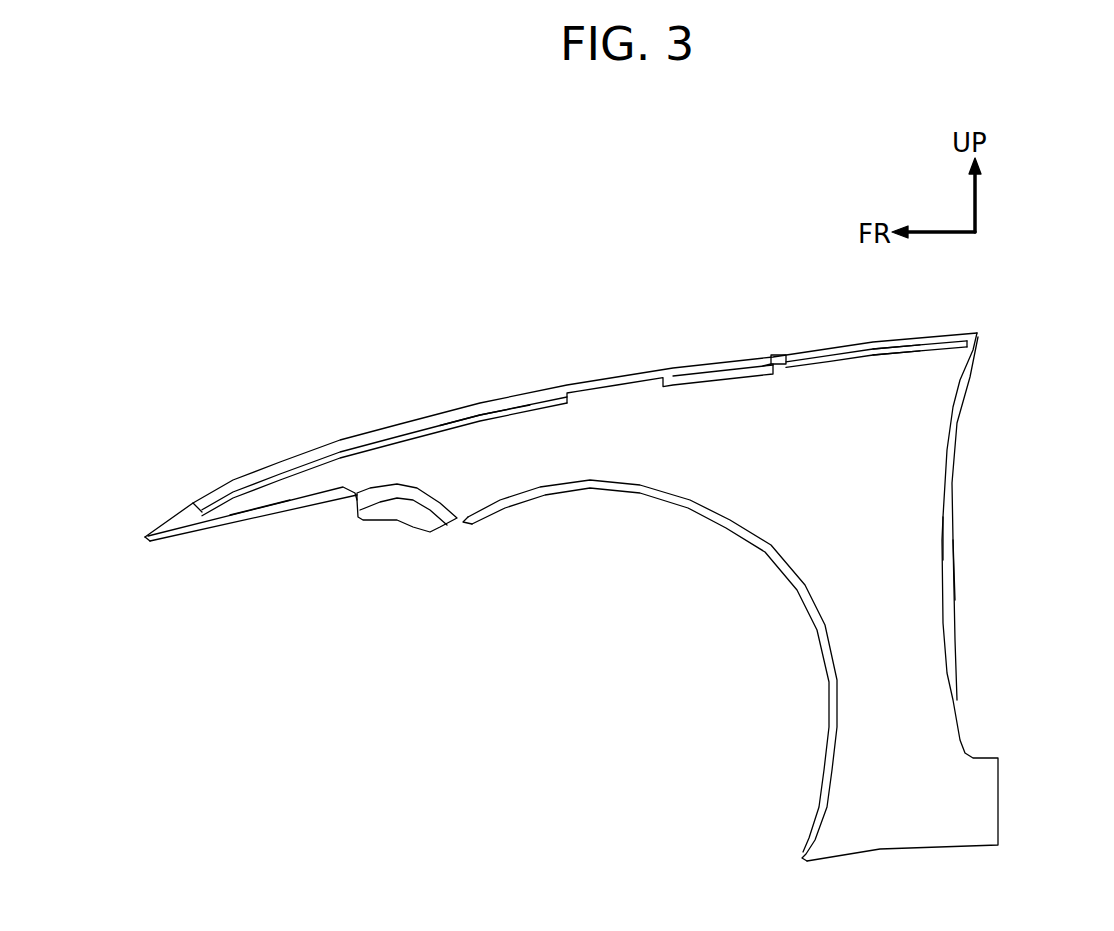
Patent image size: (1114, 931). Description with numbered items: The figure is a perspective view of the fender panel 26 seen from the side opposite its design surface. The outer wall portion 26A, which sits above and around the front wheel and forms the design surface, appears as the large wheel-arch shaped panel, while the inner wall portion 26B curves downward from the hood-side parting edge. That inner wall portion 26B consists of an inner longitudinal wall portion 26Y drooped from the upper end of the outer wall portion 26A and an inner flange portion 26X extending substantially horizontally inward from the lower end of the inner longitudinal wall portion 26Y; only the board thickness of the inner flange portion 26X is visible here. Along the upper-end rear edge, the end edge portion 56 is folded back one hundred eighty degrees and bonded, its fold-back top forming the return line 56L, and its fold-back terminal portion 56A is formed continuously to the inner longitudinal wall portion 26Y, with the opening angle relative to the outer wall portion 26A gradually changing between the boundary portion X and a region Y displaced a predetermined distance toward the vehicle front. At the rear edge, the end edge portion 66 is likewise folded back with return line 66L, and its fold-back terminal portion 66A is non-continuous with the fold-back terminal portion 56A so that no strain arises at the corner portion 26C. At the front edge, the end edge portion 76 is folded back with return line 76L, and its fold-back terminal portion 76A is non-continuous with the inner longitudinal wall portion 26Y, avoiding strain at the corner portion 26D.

The fender panel 26 is at (698, 300).
The outer wall portion 26A is at (653, 443).
The inner wall portion 26B is at (539, 399).
The corner portion 26C is at (977, 333).
The corner portion 26D is at (148, 538).
The inner flange portion 26X is at (440, 420).
The inner longitudinal wall portion 26Y is at (490, 410).
The end edge portion 56 is at (840, 357).
The fold-back terminal portion 56A is at (880, 351).
The return line 56L is at (883, 343).
The end edge portion 66 is at (949, 478).
The fold-back terminal portion 66A is at (946, 516).
The return line 66L is at (950, 560).
The end edge portion 76 is at (213, 519).
The fold-back terminal portion 76A is at (258, 509).
The return line 76L is at (318, 505).
The boundary portion X is at (789, 353).
The region Y is at (767, 357).